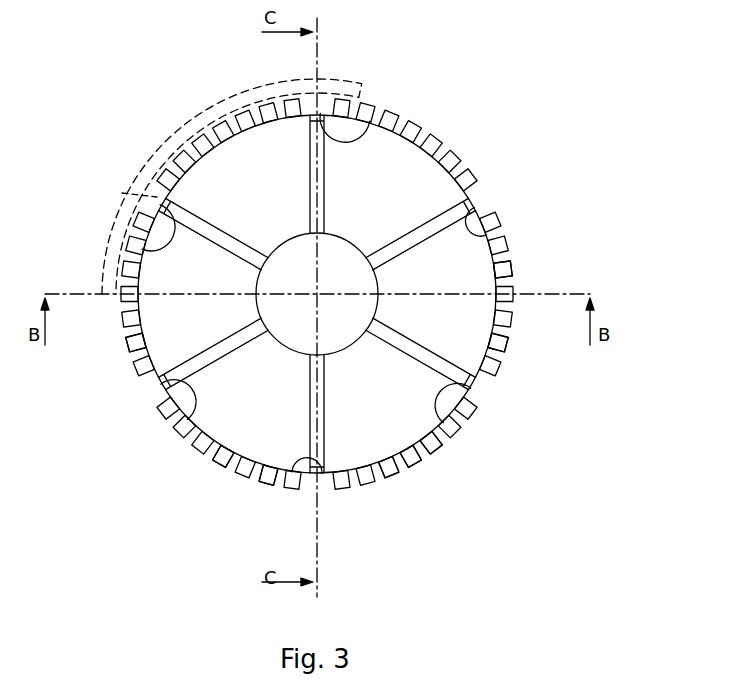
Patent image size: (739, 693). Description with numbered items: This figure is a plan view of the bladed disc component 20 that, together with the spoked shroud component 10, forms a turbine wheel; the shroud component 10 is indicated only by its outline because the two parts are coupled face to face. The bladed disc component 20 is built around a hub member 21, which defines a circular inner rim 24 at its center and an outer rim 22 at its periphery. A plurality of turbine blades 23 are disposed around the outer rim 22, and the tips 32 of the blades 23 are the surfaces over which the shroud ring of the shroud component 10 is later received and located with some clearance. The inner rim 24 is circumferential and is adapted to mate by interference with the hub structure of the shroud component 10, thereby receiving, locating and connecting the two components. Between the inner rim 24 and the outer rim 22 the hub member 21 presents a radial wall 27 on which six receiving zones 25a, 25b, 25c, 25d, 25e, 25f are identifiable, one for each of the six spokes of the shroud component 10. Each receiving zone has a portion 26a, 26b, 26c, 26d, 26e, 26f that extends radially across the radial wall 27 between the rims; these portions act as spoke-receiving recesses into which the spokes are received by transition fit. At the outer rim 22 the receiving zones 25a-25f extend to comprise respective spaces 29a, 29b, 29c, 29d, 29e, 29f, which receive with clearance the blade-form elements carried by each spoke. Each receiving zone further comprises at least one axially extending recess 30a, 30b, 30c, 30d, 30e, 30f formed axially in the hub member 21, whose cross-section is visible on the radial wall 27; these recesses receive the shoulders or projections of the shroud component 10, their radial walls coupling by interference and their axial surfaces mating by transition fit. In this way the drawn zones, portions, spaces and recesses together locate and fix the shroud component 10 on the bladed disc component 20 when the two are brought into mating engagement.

The shroud component 10 is at (166, 141).
The bladed disc component 20 is at (491, 80).
The hub member 21 is at (376, 228).
The outer rim 22 is at (150, 386).
The turbine blades 23 is at (513, 268).
The inner rim 24 is at (304, 346).
The receiving zone 25a is at (446, 350).
The receiving zone 25b is at (426, 210).
The receiving zone 25c is at (300, 156).
The receiving zone 25d is at (190, 240).
The receiving zone 25e is at (206, 378).
The receiving zone 25f is at (333, 431).
The portion of receiving zone 26a is at (400, 345).
The portion of receiving zone 26b is at (400, 246).
The portion of receiving zone 26c is at (325, 200).
The portion of receiving zone 26d is at (237, 243).
The portion of receiving zone 26e is at (234, 340).
The portion of receiving zone 26f is at (316, 390).
The radial wall 27 is at (274, 447).
The space 29a is at (483, 388).
The space 29b is at (480, 204).
The space 29c is at (322, 108).
The space 29d is at (150, 206).
The space 29e is at (152, 397).
The space 29f is at (324, 487).
The axially extending recess 30a is at (454, 431).
The axially extending recess 30b is at (494, 216).
The axially extending recess 30c is at (350, 105).
The axially extending recess 30d is at (130, 244).
The axially extending recess 30e is at (188, 432).
The axially extending recess 30f is at (297, 482).
The tips of the blades 32 is at (220, 468).